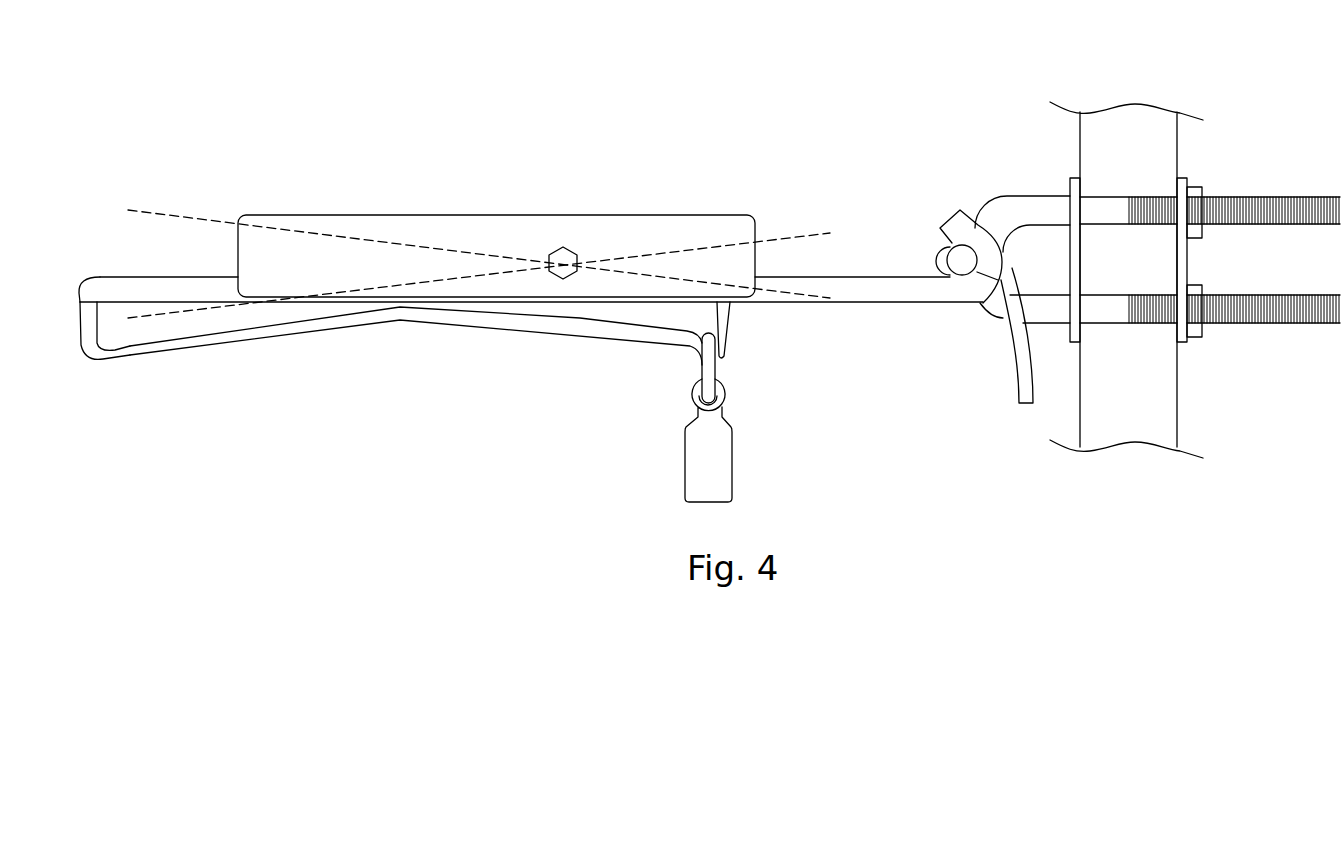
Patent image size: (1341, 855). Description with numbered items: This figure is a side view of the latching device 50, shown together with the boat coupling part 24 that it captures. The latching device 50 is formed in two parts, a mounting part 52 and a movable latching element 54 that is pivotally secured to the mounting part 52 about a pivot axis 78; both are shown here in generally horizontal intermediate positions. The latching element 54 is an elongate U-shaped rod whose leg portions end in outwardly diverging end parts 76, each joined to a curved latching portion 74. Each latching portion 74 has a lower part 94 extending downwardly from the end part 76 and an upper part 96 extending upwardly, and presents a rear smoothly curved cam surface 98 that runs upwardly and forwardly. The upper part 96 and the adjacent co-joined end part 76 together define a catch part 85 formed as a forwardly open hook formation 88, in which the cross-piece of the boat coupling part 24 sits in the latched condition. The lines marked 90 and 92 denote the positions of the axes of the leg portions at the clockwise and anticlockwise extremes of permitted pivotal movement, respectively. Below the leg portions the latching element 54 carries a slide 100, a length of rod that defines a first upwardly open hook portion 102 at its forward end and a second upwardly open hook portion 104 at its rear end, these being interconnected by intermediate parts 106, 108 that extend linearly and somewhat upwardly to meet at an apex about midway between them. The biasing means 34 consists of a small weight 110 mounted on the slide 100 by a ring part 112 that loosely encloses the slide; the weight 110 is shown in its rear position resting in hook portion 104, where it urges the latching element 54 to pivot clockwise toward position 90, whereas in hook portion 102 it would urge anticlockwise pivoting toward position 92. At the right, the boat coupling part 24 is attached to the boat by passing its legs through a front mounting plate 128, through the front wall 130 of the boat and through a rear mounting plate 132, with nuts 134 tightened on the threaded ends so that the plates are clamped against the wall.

The boat coupling part 24 is at (1265, 143).
The biasing means 34 is at (626, 434).
The latching device 50 is at (696, 130).
The mounting part 52 is at (305, 204).
The latching element 54 is at (107, 263).
The latching portion 74 is at (934, 210).
The end part 76 is at (878, 292).
The pivot axis 78 is at (560, 255).
The catch part 85 is at (878, 228).
The hook formation 88 is at (927, 239).
The position of leg portion axes at clockwise extreme 90 is at (172, 213).
The position of leg portion axes at anticlockwise extreme 92 is at (172, 312).
The lower part 94 is at (1022, 355).
The upper part 96 is at (958, 228).
The cam surface 98 is at (1019, 305).
The slide 100 is at (361, 385).
The first hook portion 102 is at (100, 360).
The second hook portion 104 is at (720, 348).
The intermediate part 106 is at (255, 332).
The intermediate part 108 is at (592, 335).
The weight 110 is at (712, 468).
The ring part 112 is at (710, 365).
The front mounting plate 128 is at (1073, 345).
The front wall 130 is at (1132, 392).
The rear mounting plate 132 is at (1188, 342).
The nut 134 is at (1192, 233).